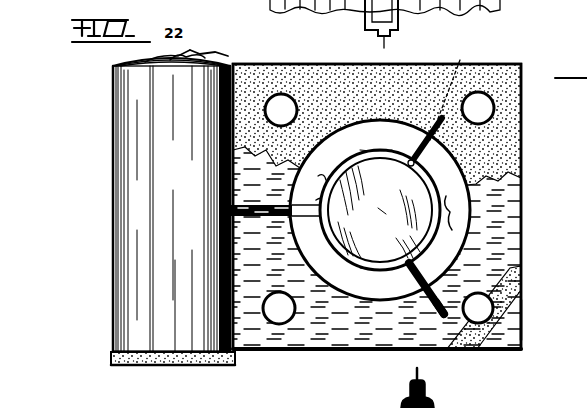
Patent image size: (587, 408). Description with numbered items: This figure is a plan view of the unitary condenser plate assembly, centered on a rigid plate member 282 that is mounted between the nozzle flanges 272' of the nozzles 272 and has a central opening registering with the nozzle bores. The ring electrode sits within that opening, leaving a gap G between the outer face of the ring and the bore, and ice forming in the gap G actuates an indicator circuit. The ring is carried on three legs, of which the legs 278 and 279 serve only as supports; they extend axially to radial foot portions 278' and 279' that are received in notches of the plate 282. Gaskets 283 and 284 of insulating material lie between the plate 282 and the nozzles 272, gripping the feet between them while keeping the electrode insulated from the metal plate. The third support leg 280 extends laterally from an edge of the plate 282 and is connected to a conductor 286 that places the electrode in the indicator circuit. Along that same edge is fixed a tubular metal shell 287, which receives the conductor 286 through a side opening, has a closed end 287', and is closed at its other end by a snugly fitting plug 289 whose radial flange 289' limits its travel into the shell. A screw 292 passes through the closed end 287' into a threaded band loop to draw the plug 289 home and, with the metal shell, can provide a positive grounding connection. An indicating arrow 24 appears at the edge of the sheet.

The arrow indicator 24 is at (568, 76).
The nozzle 272 is at (311, 188).
The nozzle flange 272' is at (535, 320).
The leg 278 is at (387, 194).
The radial foot portion 278' is at (459, 88).
The leg 279 is at (432, 283).
The radial foot portion 279' is at (418, 311).
The support leg 280 is at (377, 206).
The rigid plate member 282 is at (362, 339).
The gasket 283 is at (516, 278).
The gasket 284 is at (505, 148).
The conductor 286 is at (260, 221).
The tubular shell 287 is at (149, 204).
The closed end 287' is at (215, 51).
The plug 289 is at (173, 380).
The radial flange 289' is at (152, 359).
The screw 292 is at (150, 59).
The gap G is at (452, 207).